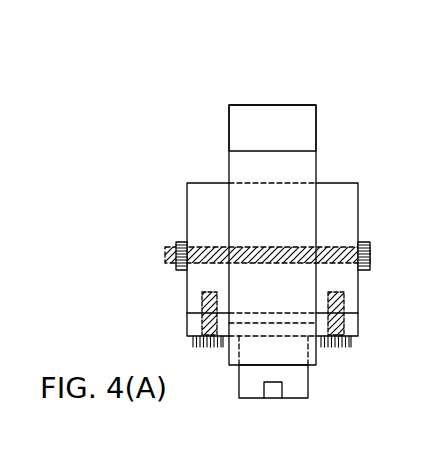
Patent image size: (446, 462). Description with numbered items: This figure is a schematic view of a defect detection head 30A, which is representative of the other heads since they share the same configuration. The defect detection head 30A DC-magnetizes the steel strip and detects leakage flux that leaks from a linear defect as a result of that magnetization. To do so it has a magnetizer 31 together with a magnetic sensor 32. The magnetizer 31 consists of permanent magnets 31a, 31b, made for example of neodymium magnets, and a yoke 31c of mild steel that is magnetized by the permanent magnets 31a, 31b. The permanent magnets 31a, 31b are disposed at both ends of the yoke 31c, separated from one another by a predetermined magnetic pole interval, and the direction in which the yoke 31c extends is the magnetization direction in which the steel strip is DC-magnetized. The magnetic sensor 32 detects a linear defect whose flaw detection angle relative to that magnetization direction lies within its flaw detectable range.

The defect detection head 30A is at (195, 83).
The magnetizer 31 is at (275, 98).
The yoke 31c is at (307, 130).
The permanent magnet 31a is at (248, 213).
The permanent magnet 31b is at (267, 265).
The magnetic sensor 32 is at (259, 378).